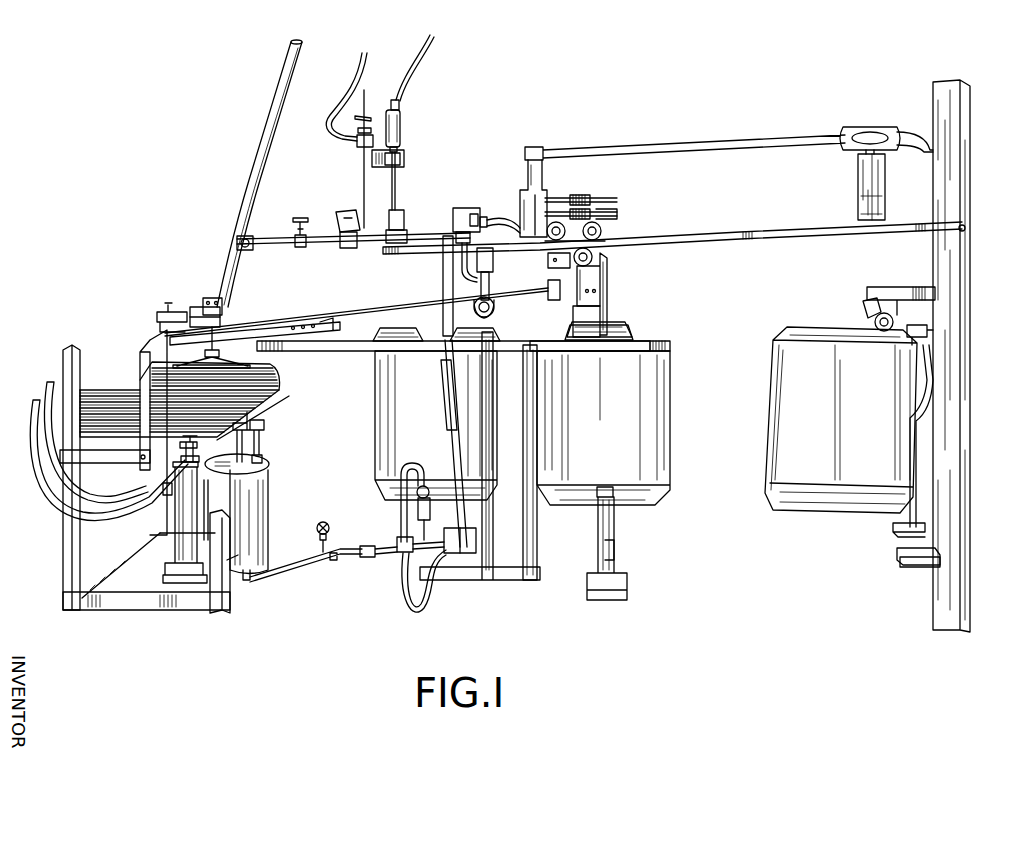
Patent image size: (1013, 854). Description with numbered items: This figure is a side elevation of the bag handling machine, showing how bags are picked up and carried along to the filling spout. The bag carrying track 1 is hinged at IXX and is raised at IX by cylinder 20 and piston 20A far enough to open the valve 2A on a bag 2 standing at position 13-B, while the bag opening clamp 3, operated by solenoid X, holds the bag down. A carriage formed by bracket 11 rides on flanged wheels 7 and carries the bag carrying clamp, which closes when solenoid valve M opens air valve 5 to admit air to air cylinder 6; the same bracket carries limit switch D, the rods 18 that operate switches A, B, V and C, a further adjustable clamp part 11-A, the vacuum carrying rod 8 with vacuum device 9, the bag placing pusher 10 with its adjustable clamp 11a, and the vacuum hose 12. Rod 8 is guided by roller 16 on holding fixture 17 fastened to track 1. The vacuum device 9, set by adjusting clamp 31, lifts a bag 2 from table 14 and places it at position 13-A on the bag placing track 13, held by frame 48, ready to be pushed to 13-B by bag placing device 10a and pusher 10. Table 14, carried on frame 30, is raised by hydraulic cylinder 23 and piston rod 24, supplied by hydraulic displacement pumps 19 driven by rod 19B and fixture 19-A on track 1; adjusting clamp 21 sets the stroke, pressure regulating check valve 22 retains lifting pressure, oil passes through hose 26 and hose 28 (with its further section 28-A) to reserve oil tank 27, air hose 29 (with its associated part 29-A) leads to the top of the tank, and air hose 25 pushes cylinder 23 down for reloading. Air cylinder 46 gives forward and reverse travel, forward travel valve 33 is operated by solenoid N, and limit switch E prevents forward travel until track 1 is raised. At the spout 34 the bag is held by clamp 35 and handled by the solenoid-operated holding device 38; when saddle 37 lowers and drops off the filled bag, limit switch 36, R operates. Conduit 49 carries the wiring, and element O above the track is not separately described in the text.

The bag carrying track 1 is at (735, 238).
The bag 2 is at (385, 427).
The valve 2A is at (668, 350).
The bag opening clamp 3 is at (598, 510).
The air valve 5 is at (456, 222).
The air cylinder 6 is at (560, 282).
The flanged wheels 7 is at (601, 230).
The vacuum carrying rod 8 is at (382, 296).
The vacuum device 9 is at (225, 352).
The bag placing pusher 10 is at (318, 332).
The bag placing device 10a is at (225, 310).
The bracket 11 is at (600, 218).
The adjustable clamp 11a is at (172, 312).
The adjustable clamp 11-A is at (600, 278).
The vacuum hose 12 is at (256, 168).
The bag placing track 13 is at (352, 333).
The bag ready position 13-A is at (436, 332).
The bag valve opening position 13-B is at (590, 411).
The table 14 is at (284, 400).
The roller 16 is at (494, 308).
The holding fixture 17 is at (492, 279).
The rods 18 is at (578, 198).
The hydraulic displacement pumps 19 is at (470, 553).
The fixture 19-A is at (443, 266).
The rod 19B is at (441, 388).
The cylinder 20 is at (401, 120).
The piston 20A is at (396, 175).
The adjusting clamp 21 is at (455, 385).
The pressure regulating check valve 22 is at (302, 247).
The hydraulic cylinder 23 is at (176, 560).
The piston rod 24 is at (194, 450).
The air hose 25 is at (105, 520).
The hose 26 is at (280, 570).
The reserve oil tank 27 is at (270, 490).
The hose 28 is at (411, 576).
The hose loop 28-A is at (408, 607).
The air hose 29 is at (90, 487).
The fittings 29-A is at (264, 430).
The frame 30 is at (160, 605).
The adjusting clamp 31 is at (203, 300).
The forward travel valve 33 is at (342, 248).
The spout 34 is at (915, 327).
The clamp 35 is at (866, 320).
The limit switch 36 is at (910, 568).
The saddle 37 is at (895, 526).
The holding device 38 is at (870, 288).
The cylinder 46 is at (237, 243).
The frame 48 is at (537, 531).
The conduit 49 is at (675, 148).
The switch A is at (522, 228).
The switch B is at (538, 195).
The switch C is at (862, 205).
The limit switch D is at (605, 312).
The limit switch E is at (404, 158).
The solenoid valve M is at (466, 208).
The solenoid N is at (338, 218).
The valve O is at (368, 117).
The limit switch R is at (898, 558).
The switch V is at (858, 165).
The solenoid X is at (612, 550).
The raising point IX is at (407, 212).
The hinge IXX is at (964, 228).